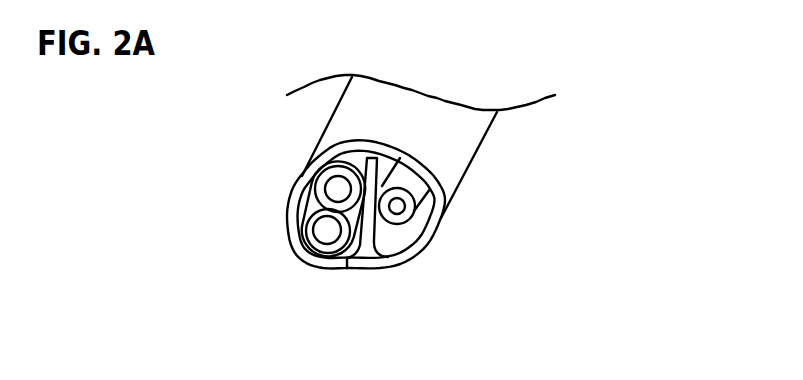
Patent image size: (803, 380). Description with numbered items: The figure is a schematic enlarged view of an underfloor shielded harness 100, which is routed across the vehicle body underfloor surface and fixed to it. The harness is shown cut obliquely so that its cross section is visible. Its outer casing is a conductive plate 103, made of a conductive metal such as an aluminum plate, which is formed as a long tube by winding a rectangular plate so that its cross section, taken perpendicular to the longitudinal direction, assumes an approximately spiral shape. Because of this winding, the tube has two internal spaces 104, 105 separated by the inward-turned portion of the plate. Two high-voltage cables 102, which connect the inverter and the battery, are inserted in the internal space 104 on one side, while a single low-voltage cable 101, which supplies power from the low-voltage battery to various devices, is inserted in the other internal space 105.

The underfloor shielded harness 100 is at (547, 167).
The low-voltage cable 101 is at (405, 210).
The high-voltage cables 102 is at (316, 163).
The conductive plate 103 is at (447, 172).
The internal space 104 is at (309, 201).
The internal space 105 is at (392, 227).